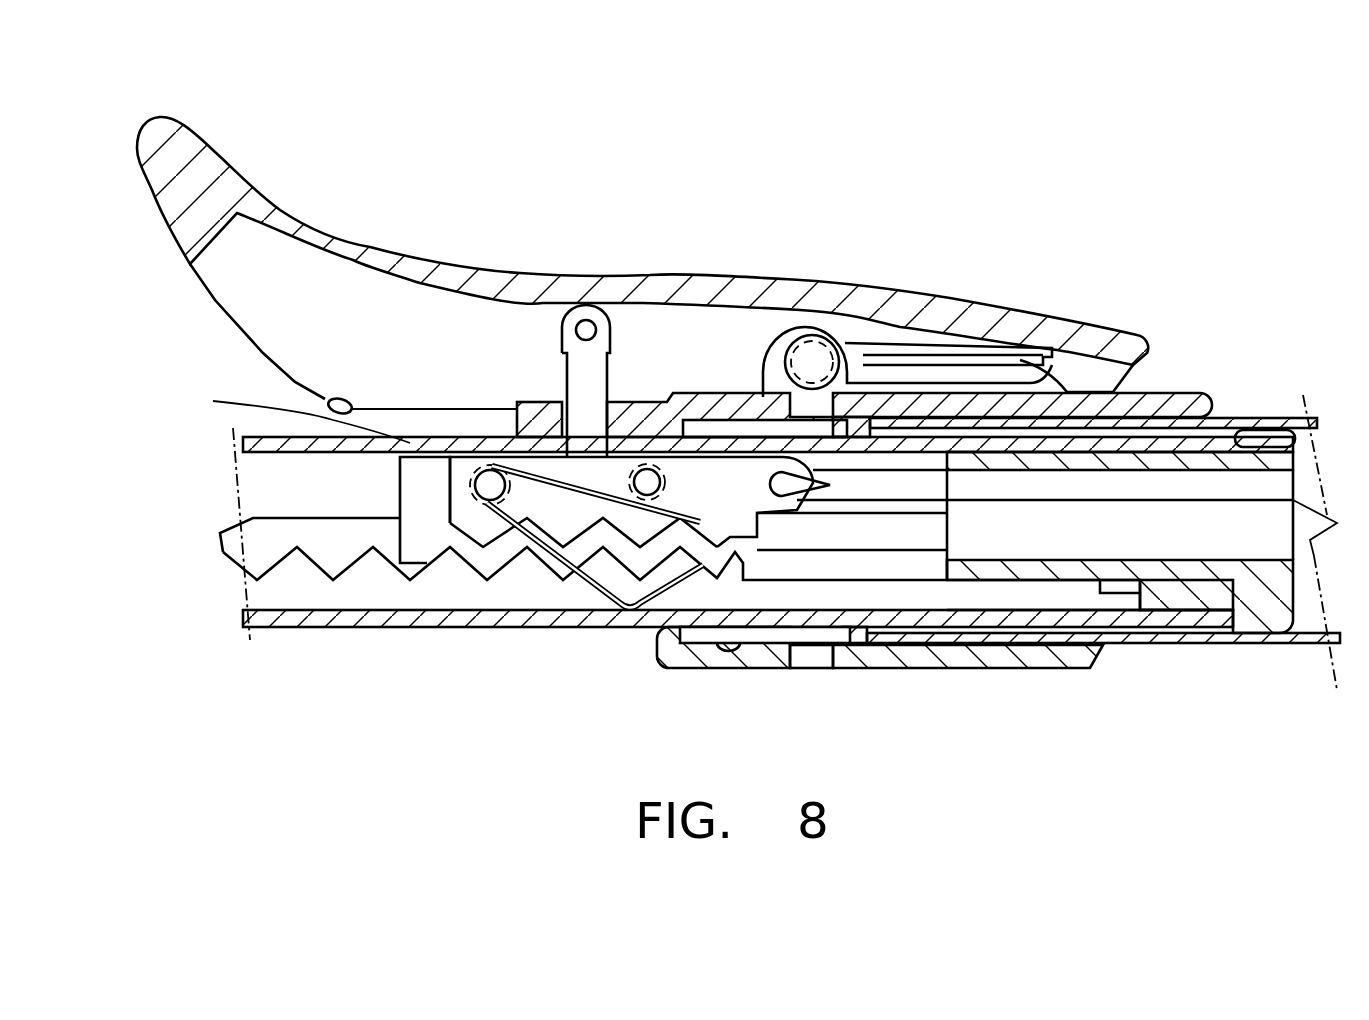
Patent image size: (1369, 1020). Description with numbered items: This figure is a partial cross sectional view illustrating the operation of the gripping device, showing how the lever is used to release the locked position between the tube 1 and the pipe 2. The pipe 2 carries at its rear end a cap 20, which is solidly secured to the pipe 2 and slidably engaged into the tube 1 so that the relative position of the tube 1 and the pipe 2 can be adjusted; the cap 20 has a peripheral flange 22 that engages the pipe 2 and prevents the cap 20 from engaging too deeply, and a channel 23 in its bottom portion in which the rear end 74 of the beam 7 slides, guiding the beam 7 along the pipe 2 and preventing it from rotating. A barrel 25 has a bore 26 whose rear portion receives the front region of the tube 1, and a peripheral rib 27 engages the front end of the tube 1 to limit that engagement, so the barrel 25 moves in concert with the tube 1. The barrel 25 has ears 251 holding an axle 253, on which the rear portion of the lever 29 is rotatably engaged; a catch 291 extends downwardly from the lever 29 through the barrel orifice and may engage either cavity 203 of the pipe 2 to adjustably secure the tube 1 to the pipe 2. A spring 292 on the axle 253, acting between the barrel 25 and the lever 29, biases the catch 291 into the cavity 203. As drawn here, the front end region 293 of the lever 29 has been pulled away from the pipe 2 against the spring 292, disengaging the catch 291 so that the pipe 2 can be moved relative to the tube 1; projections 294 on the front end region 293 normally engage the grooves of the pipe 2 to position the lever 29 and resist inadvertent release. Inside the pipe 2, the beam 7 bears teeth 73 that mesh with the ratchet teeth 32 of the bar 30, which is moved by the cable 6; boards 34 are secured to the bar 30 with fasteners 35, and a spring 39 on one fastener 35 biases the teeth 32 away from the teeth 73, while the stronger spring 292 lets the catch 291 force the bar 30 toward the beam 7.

The tube 1 is at (1307, 643).
The pipe 2 is at (400, 618).
The cable 6 is at (1308, 470).
The beam 7 is at (290, 585).
The cap 20 is at (1185, 590).
The peripheral flange 22 is at (1255, 608).
The channel 23 is at (1120, 596).
The barrel 25 is at (980, 662).
The bore 26 is at (733, 637).
The peripheral rib 27 is at (853, 637).
The lever 29 is at (693, 288).
The bar 30 is at (487, 535).
The ratchet teeth 32 is at (512, 555).
The board 34 is at (428, 540).
The fastener 35 is at (487, 475).
The spring 39 is at (573, 587).
The teeth 73 is at (270, 563).
The rear end 74 is at (1045, 596).
The cavity 203 is at (267, 437).
The ear 251 is at (766, 340).
The axle 253 is at (813, 360).
The catch 291 is at (580, 385).
The spring 292 is at (950, 345).
The front end region 293 is at (193, 173).
The projection 294 is at (326, 399).